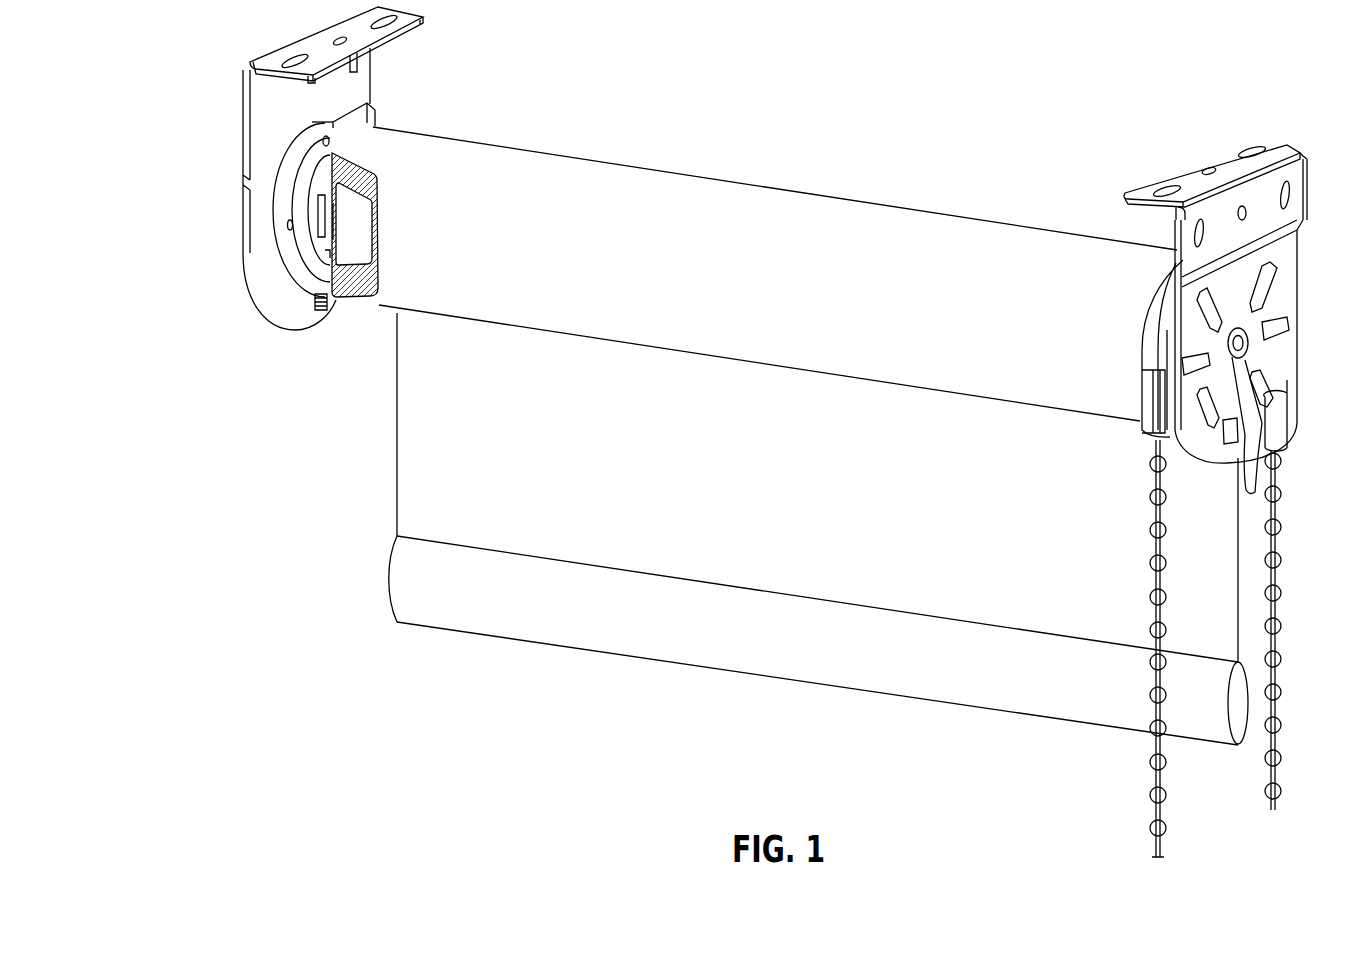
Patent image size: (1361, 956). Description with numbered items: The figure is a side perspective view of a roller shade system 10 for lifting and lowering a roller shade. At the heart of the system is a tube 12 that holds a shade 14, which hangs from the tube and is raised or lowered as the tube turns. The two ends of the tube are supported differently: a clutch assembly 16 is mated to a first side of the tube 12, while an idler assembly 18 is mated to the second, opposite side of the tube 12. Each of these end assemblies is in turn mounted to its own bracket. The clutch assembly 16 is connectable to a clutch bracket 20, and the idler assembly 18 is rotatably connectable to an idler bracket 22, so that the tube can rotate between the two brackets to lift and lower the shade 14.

The roller shade system 10 is at (258, 414).
The tube 12 is at (368, 170).
The shade 14 is at (781, 273).
The clutch assembly 16 is at (1155, 313).
The idler assembly 18 is at (343, 222).
The clutch bracket 20 is at (1267, 192).
The idler bracket 22 is at (267, 125).